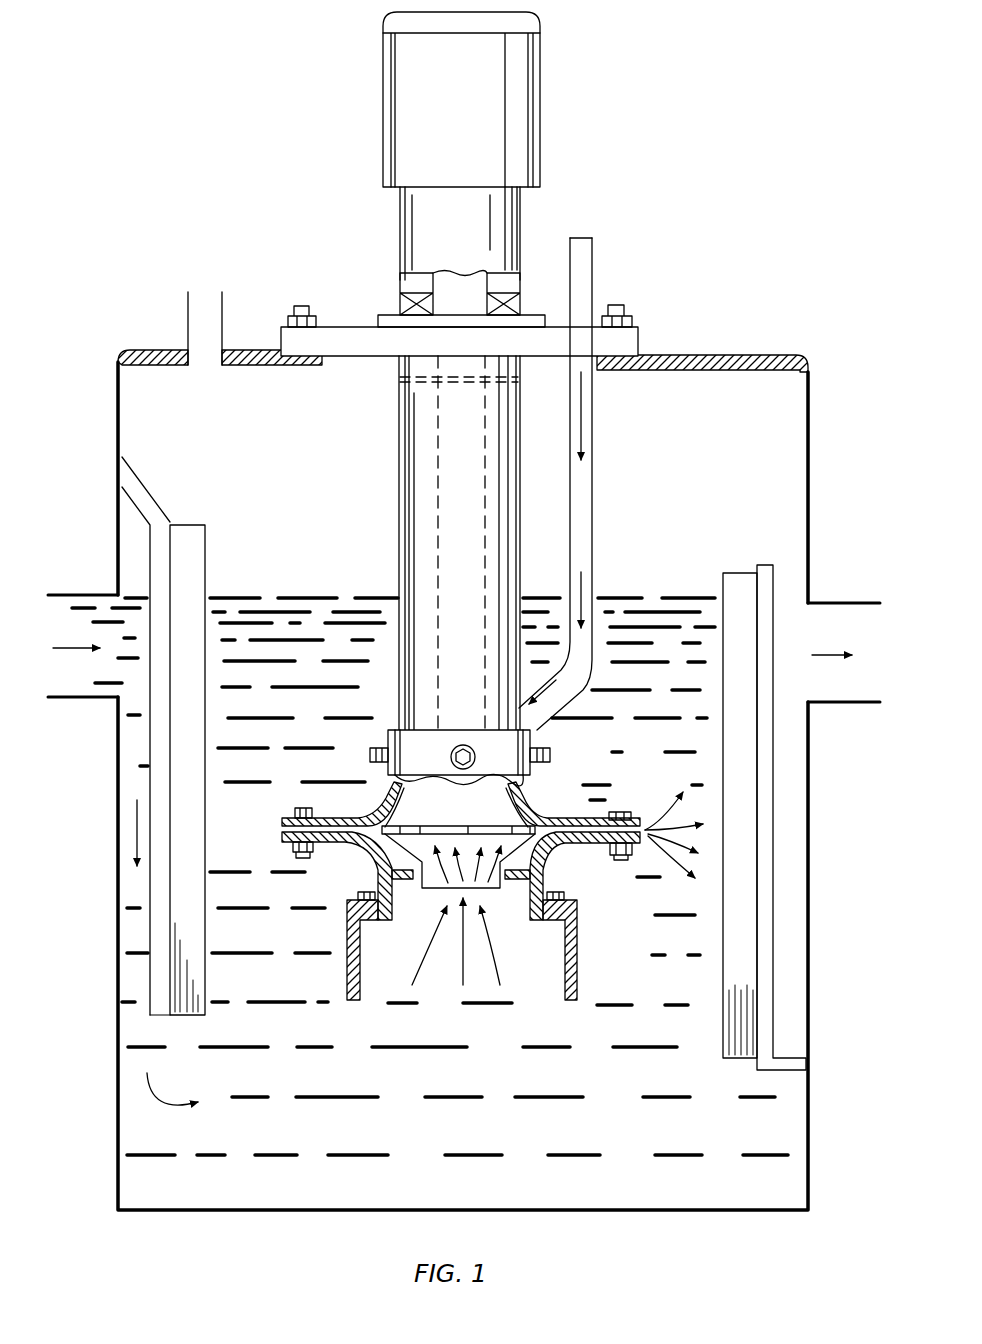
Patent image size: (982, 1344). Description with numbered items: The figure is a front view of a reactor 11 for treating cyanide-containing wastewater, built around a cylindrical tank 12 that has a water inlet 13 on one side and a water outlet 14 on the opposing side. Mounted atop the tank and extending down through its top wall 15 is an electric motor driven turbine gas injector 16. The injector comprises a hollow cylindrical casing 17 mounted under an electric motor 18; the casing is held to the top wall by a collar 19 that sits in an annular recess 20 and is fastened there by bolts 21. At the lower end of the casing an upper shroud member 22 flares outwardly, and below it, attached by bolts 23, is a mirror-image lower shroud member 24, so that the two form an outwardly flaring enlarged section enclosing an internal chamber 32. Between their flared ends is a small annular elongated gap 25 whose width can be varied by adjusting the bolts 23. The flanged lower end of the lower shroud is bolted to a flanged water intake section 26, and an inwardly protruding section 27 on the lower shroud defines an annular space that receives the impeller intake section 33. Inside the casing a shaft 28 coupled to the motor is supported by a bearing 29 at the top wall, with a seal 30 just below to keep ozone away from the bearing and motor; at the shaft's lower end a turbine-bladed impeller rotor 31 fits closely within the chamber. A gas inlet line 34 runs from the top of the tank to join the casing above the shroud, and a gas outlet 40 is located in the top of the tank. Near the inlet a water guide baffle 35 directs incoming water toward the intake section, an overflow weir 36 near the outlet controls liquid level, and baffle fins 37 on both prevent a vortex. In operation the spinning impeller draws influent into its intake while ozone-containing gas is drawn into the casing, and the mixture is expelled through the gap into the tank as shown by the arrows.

The reactor 11 is at (696, 284).
The cylindrical tank 12 is at (464, 734).
The water inlet 13 is at (100, 592).
The water outlet 14 is at (858, 704).
The top wall 15 is at (760, 352).
The turbine gas injector 16 is at (548, 203).
The hollow cylindrical casing 17 is at (400, 236).
The electric motor 18 is at (542, 104).
The collar 19 is at (563, 327).
The annular recess 20 is at (655, 356).
The bolts 21 is at (625, 310).
The upper shroud member 22 is at (528, 798).
The bolts 23 is at (620, 812).
The lower shroud member 24 is at (520, 853).
The annular elongated gap 25 is at (282, 828).
The water intake section 26 is at (580, 962).
The inwardly protruding section 27 is at (521, 890).
The shaft 28 is at (438, 455).
The bearing 29 is at (400, 300).
The seal 30 is at (400, 378).
The turbine-bladed impeller rotor 31 is at (392, 850).
The internal chamber 32 is at (520, 864).
The impeller intake section 33 is at (438, 891).
The gas inlet line 34 is at (595, 465).
The water guide baffle 35 is at (140, 478).
The overflow weir 36 is at (775, 580).
The baffle fins 37 is at (195, 552).
The gas outlet 40 is at (222, 302).